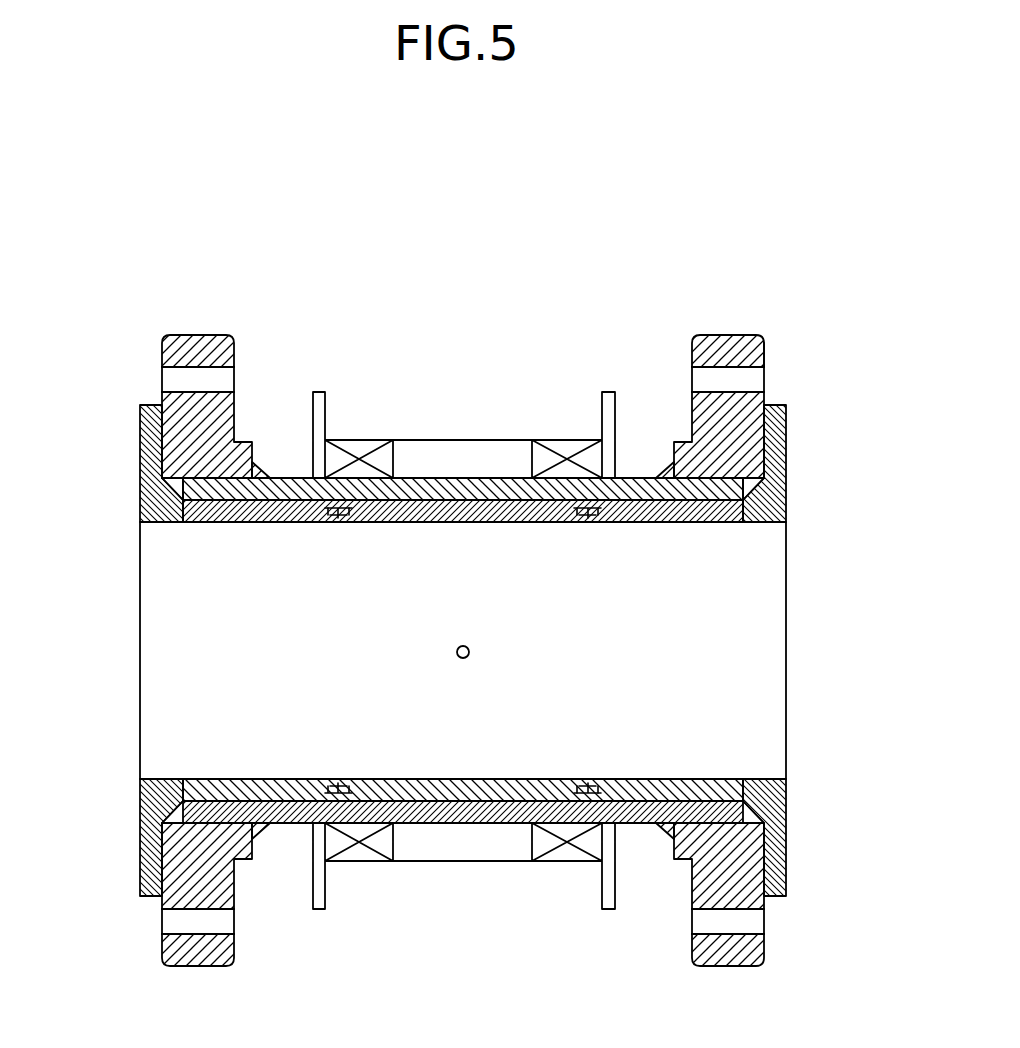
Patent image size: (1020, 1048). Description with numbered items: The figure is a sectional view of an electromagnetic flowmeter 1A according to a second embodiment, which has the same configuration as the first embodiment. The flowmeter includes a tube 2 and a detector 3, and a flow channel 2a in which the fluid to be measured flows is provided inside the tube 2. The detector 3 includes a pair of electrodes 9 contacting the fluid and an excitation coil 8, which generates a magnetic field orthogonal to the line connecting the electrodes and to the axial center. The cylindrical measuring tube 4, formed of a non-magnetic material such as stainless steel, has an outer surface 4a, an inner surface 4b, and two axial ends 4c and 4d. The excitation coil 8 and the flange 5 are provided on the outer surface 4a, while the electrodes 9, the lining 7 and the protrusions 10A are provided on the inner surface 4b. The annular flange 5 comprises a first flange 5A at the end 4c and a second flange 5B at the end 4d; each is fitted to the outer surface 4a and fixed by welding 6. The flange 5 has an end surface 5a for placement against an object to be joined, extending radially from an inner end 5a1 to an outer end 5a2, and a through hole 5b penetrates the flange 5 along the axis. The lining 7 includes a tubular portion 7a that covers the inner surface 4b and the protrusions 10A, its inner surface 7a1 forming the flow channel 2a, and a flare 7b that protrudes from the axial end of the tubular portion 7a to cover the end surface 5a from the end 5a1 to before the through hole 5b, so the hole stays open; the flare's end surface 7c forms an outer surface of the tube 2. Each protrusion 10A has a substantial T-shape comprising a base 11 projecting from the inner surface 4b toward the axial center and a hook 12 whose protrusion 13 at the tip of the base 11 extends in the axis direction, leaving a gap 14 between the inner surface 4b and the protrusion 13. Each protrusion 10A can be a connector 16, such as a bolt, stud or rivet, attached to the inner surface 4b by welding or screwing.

The electromagnetic flowmeter 1A is at (763, 240).
The tube 2 is at (502, 525).
The flow channel 2a is at (782, 705).
The detector 3 is at (331, 647).
The measuring tube 4 is at (463, 633).
The outer surface 4a is at (284, 477).
The inner surface 4b is at (208, 501).
The end 4c is at (745, 523).
The end 4d is at (183, 505).
The flange 5 is at (471, 617).
The first flange 5A is at (692, 338).
The second flange 5B is at (166, 337).
The end surface 5a is at (160, 355).
The end 5a1 is at (766, 478).
The end 5a2 is at (762, 343).
The through hole 5b is at (188, 378).
The welding 6 is at (264, 477).
The lining 7 is at (465, 650).
The tubular portion 7a is at (622, 522).
The inner surface 7a1 is at (740, 779).
The flare 7b is at (465, 650).
The end surface 7c is at (140, 428).
The excitation coil 8 is at (568, 440).
The electrode 9 is at (457, 652).
The protrusion 10A is at (348, 520).
The base 11 is at (355, 510).
The hook 12 is at (483, 651).
The protrusion 13 is at (338, 519).
The gap 14 is at (322, 511).
The connector 16 is at (467, 650).